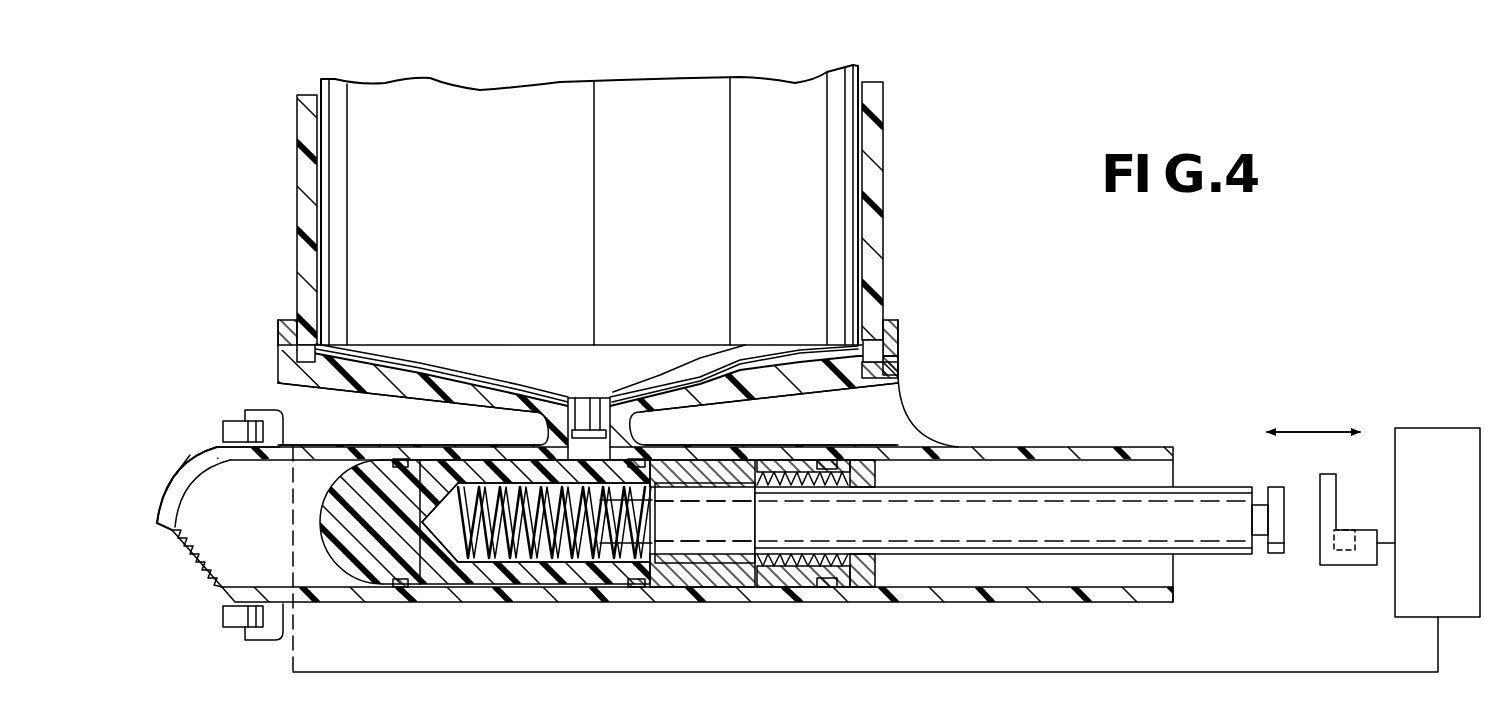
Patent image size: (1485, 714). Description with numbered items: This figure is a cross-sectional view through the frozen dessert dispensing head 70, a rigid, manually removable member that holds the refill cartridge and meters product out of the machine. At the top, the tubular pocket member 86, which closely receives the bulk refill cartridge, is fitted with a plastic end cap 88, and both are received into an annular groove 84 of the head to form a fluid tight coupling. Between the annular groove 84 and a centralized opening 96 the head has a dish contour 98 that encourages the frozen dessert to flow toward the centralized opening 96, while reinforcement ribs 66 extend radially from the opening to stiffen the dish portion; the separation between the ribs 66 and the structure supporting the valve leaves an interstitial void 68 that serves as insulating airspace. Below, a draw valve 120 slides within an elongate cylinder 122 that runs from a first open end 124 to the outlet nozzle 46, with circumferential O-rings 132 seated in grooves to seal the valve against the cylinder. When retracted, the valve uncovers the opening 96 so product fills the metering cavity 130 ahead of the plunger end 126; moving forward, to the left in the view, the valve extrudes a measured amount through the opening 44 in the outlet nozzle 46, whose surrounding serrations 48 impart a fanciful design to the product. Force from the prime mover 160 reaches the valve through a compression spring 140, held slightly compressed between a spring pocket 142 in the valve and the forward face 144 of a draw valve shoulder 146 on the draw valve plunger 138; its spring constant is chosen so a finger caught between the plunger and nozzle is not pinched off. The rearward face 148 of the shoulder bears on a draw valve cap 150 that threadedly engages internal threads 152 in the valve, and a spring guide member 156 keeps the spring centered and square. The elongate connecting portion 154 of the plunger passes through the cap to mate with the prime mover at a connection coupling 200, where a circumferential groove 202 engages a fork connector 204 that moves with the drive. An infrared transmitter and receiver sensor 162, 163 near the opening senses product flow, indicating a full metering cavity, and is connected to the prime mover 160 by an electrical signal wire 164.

The opening 44 is at (193, 562).
The outlet nozzle 46 is at (208, 449).
The serrations 48 is at (190, 560).
The reinforcement ribs 66 is at (403, 377).
The interstitial void 68 is at (588, 420).
The dispensing head 70 is at (955, 358).
The annular groove 84 is at (318, 347).
The pocket member 86 is at (878, 160).
The end cap 88 is at (422, 368).
The centralized opening 96 is at (585, 418).
The dish contour 98 is at (643, 366).
The draw valve 120 is at (362, 540).
The elongate cylinder 122 is at (440, 590).
The first open end 124 is at (1145, 573).
The plunger end 126 is at (322, 527).
The metering cavity 130 is at (211, 517).
The O-rings 132 is at (398, 588).
The draw valve plunger 138 is at (958, 472).
The compression spring 140 is at (553, 560).
The spring pocket 142 is at (478, 583).
The forward face 144 is at (657, 513).
The draw valve shoulder 146 is at (700, 557).
The rearward face 148 is at (772, 466).
The draw valve cap 150 is at (863, 570).
The internal threads 152 is at (780, 573).
The elongate connecting portion 154 is at (961, 520).
The spring guide member 156 is at (622, 540).
The prime mover 160 is at (1437, 522).
The infrared transmitter sensor 162 is at (235, 428).
The infrared receiver sensor 163 is at (238, 620).
The electrical signal wire 164 is at (1050, 672).
The connection coupling 200 is at (1325, 572).
The circumferential groove 202 is at (1258, 548).
The fork connector 204 is at (1365, 490).